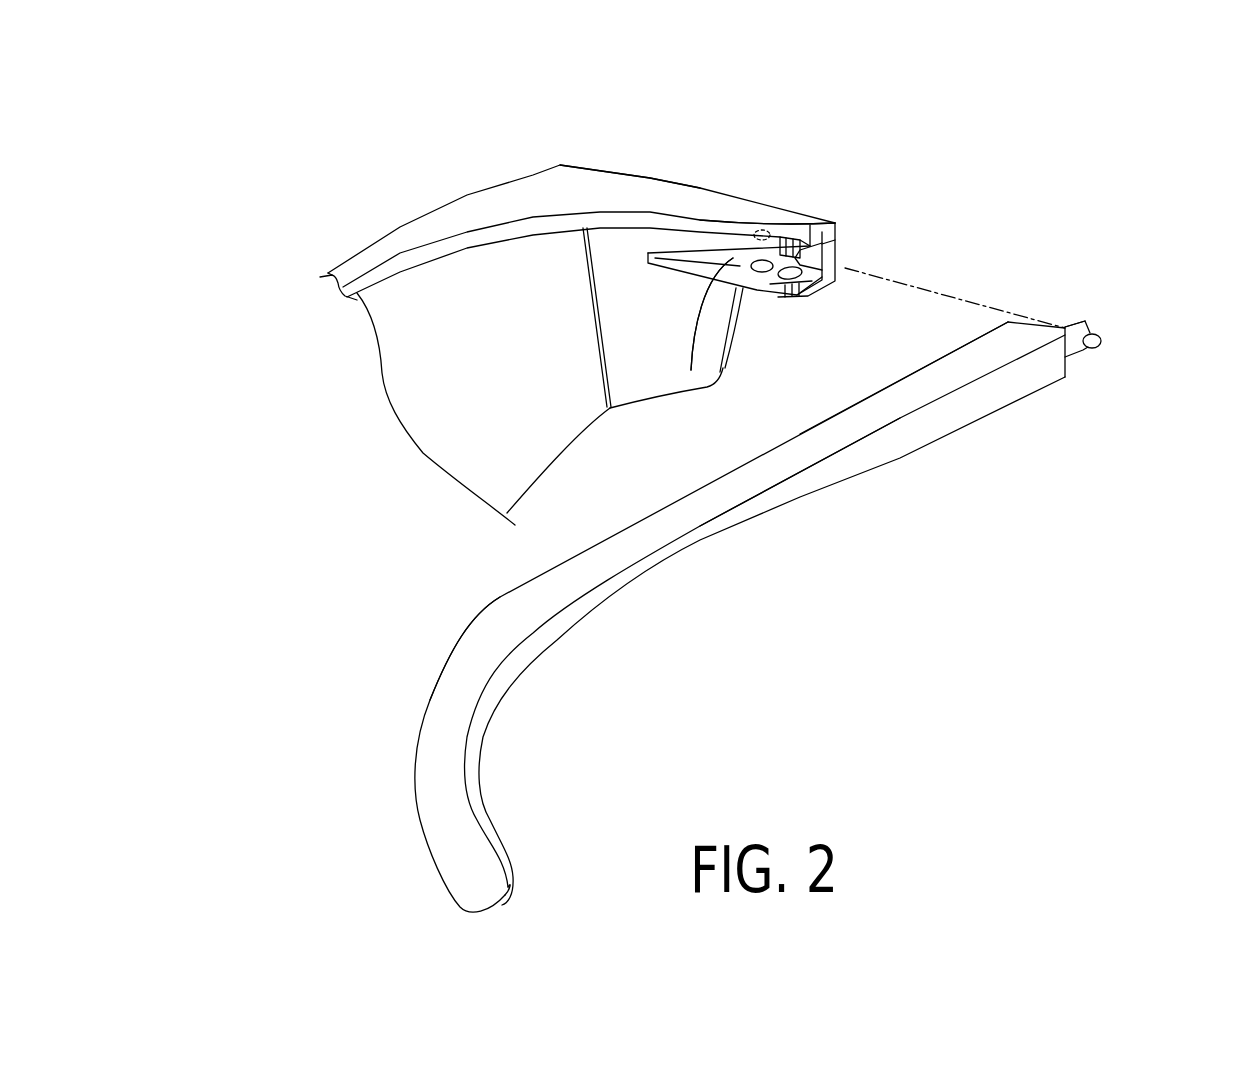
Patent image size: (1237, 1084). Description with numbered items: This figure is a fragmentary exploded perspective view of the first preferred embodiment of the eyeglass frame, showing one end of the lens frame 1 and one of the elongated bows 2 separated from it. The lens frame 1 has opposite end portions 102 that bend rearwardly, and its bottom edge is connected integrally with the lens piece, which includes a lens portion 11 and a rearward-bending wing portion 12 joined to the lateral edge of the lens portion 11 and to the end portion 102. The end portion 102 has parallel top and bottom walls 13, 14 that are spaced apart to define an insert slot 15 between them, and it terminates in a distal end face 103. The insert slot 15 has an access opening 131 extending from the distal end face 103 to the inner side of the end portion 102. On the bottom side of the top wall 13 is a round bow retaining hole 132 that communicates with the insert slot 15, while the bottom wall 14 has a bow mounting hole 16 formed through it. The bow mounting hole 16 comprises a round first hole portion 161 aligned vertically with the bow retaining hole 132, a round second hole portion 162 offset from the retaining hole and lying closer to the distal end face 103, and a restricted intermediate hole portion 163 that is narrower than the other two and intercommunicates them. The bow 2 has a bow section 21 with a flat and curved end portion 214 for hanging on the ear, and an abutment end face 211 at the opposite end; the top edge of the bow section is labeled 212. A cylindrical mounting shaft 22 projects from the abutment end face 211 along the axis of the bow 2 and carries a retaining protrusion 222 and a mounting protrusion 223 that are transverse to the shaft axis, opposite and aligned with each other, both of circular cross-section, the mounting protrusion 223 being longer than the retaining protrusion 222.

The lens frame 1 is at (375, 193).
The end portion 102 is at (700, 187).
The distal end face 103 is at (833, 242).
The lens portion 11 is at (457, 442).
The wing portion 12 is at (635, 375).
The top wall 13 is at (778, 218).
The access opening 131 is at (825, 222).
The bow retaining hole 132 is at (762, 228).
The bottom wall 14 is at (773, 290).
The insert slot 15 is at (838, 258).
The bow mounting hole 16 is at (763, 268).
The first hole portion 161 is at (691, 370).
The second hole portion 162 is at (790, 279).
The intermediate hole portion 163 is at (792, 232).
The bow 2 is at (693, 550).
The bow section 21 is at (737, 490).
The abutment end face 211 is at (1062, 340).
The temple top edge 212 is at (832, 418).
The curved end portion 214 is at (467, 675).
The mounting shaft 22 is at (1087, 323).
The retaining protrusion 222 is at (1070, 330).
The mounting protrusion 223 is at (1100, 345).